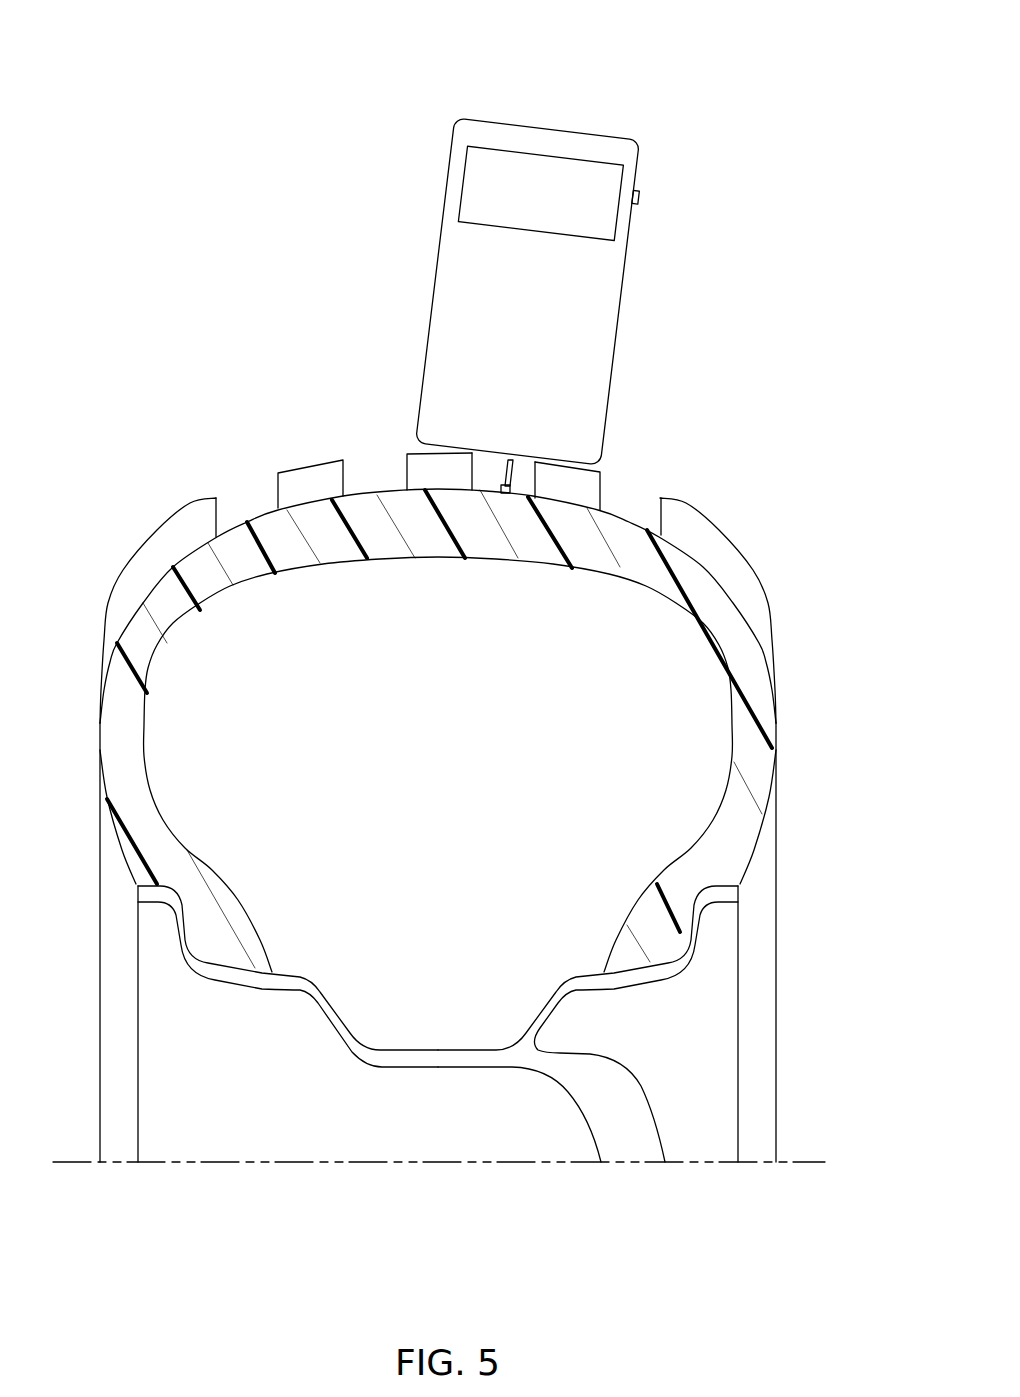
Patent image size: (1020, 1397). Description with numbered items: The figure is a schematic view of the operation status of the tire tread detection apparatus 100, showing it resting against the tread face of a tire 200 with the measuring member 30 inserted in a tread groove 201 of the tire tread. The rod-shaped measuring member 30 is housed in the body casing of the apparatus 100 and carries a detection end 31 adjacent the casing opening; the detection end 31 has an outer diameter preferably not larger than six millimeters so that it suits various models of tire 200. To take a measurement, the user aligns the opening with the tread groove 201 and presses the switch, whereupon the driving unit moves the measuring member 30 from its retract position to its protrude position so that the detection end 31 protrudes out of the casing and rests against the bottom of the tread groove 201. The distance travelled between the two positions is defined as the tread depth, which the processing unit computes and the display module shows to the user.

The tire tread detection apparatus 100 is at (531, 235).
The tire 200 is at (207, 464).
The tread groove 201 is at (477, 477).
The measuring member 30 is at (543, 465).
The detection end 31 is at (510, 495).